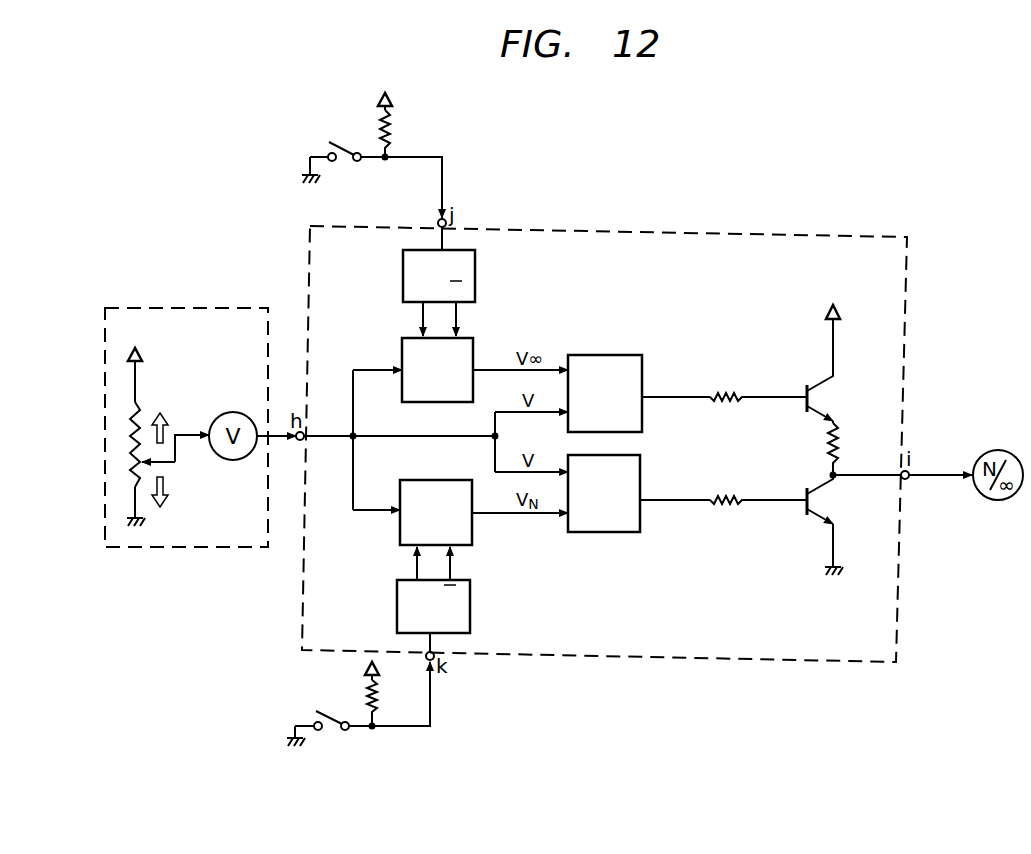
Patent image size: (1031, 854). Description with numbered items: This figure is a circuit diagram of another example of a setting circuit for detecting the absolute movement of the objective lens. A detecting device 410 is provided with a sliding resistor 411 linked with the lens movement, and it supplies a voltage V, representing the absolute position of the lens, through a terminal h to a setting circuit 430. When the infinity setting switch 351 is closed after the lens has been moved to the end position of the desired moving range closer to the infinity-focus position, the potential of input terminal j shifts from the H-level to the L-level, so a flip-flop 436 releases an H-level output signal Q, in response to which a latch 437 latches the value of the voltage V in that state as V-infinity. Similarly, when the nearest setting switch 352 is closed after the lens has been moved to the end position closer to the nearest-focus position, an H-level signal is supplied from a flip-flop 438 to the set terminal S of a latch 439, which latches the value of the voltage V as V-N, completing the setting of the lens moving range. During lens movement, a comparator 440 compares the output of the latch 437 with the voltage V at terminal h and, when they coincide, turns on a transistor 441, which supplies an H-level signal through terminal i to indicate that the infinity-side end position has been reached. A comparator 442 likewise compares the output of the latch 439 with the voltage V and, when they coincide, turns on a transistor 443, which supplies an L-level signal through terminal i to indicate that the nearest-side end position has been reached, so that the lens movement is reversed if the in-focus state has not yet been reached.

The infinity setting switch 351 is at (343, 137).
The nearest setting switch 352 is at (330, 702).
The detecting device 410 is at (211, 306).
The sliding resistor 411 is at (142, 417).
The setting circuit 430 is at (826, 236).
The flip-flop 436 is at (478, 268).
The latch 437 is at (476, 352).
The flip-flop 438 is at (472, 600).
The latch 439 is at (434, 480).
The comparator 440 is at (601, 355).
The transistor 441 is at (806, 386).
The comparator 442 is at (643, 478).
The transistor 443 is at (805, 490).